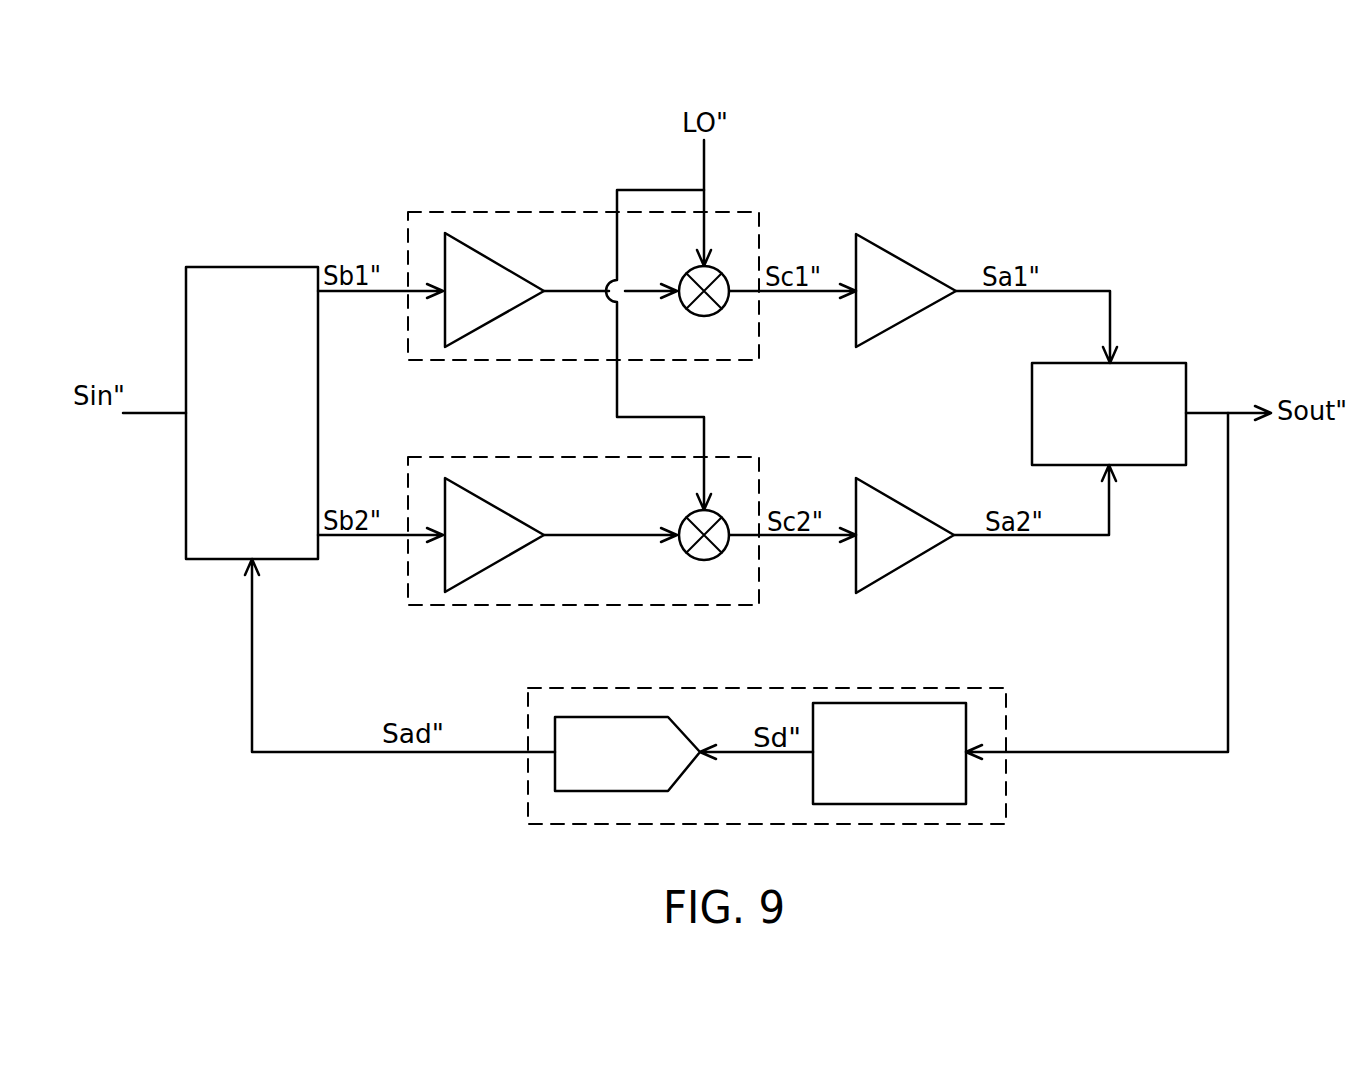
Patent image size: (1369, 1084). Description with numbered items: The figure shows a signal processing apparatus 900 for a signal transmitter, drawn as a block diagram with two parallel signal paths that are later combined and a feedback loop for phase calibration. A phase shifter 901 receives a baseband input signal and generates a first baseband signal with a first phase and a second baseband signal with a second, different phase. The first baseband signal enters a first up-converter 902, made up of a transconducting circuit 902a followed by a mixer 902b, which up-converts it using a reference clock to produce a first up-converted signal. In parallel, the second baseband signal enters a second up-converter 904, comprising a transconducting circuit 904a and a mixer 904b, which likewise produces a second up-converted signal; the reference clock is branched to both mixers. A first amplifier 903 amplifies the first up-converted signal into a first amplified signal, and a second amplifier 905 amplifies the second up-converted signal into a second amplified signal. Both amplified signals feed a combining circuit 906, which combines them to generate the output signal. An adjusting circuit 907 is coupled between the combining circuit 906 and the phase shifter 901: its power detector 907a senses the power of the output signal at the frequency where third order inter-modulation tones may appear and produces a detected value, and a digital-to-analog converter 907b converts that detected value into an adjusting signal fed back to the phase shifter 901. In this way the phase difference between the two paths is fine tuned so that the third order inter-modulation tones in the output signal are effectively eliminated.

The signal processing apparatus 900 is at (1105, 194).
The phase shifter 901 is at (251, 266).
The first up-converter 902 is at (570, 211).
The transconducting circuit 902a is at (508, 304).
The mixer 902b is at (704, 316).
The first amplifier 903 is at (912, 304).
The second up-converter 904 is at (570, 456).
The transconducting circuit 904a is at (508, 548).
The mixer 904b is at (704, 560).
The second amplifier 905 is at (912, 548).
The combining circuit 906 is at (1182, 362).
The adjusting circuit 907 is at (527, 798).
The power detector 907a is at (890, 702).
The digital-to-analog converter 907b is at (652, 768).